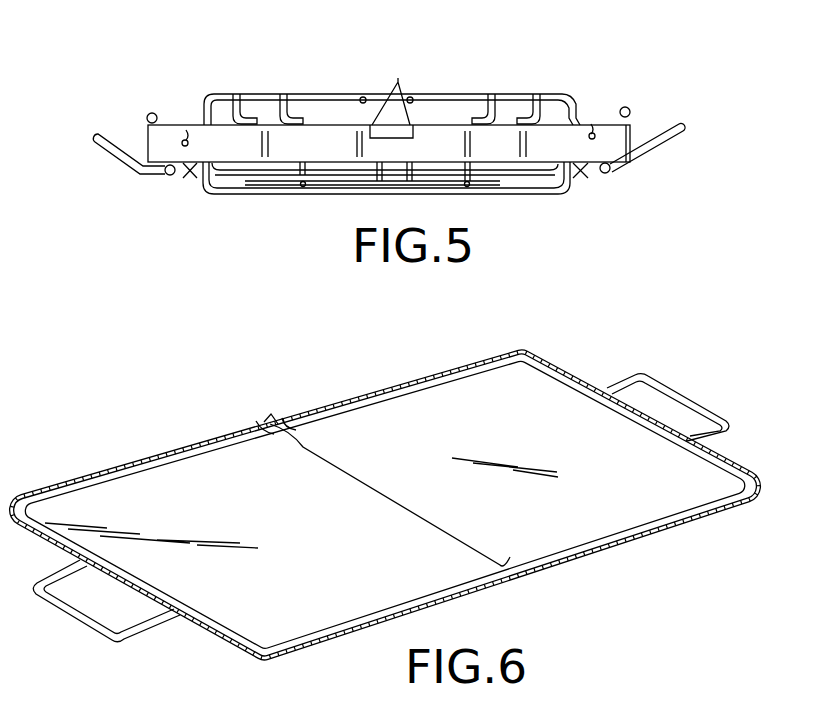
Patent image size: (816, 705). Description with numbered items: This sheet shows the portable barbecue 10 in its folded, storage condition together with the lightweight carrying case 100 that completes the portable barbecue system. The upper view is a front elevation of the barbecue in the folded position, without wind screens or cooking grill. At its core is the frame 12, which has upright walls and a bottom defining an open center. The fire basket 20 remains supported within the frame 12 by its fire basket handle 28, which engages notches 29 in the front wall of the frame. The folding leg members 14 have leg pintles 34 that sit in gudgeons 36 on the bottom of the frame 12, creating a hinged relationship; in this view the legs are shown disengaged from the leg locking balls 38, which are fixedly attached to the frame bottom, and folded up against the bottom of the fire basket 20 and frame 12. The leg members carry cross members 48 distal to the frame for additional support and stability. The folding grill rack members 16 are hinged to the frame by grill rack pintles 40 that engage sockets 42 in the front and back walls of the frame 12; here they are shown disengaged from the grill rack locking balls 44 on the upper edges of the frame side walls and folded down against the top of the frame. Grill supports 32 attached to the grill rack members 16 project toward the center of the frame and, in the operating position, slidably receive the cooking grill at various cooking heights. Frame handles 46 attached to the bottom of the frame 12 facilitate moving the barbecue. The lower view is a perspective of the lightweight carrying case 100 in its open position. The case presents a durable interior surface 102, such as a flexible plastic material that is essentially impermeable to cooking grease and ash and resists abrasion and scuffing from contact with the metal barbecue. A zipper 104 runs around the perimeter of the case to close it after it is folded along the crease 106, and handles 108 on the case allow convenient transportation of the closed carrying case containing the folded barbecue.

In FIG. 5, the portable barbecue 10 is at (630, 50).
In FIG. 5, the frame 12 is at (318, 142).
In FIG. 5, the folding leg members 14 is at (268, 197).
In FIG. 5, the folding grill rack members 16 is at (300, 96).
In FIG. 5, the fire basket 20 is at (493, 181).
In FIG. 5, the fire basket handle 28 is at (413, 138).
In FIG. 5, the notches 29 is at (394, 89).
In FIG. 5, the grill supports 32 is at (290, 110).
In FIG. 5, the leg pintles 34 is at (190, 174).
In FIG. 5, the gudgeons 36 is at (185, 178).
In FIG. 5, the leg locking balls 38 is at (167, 174).
In FIG. 5, the grill rack pintles 40 is at (185, 139).
In FIG. 5, the sockets 42 is at (190, 138).
In FIG. 5, the grill rack locking balls 44 is at (153, 113).
In FIG. 5, the frame handles 46 is at (657, 147).
In FIG. 5, the cross members 48 is at (110, 154).
In FIG. 6, the lightweight carrying case 100 is at (219, 413).
In FIG. 6, the durable interior surface 102 is at (593, 523).
In FIG. 6, the zipper 104 is at (357, 637).
In FIG. 6, the crease 106 is at (304, 447).
In FIG. 6, the handles 108 is at (702, 402).